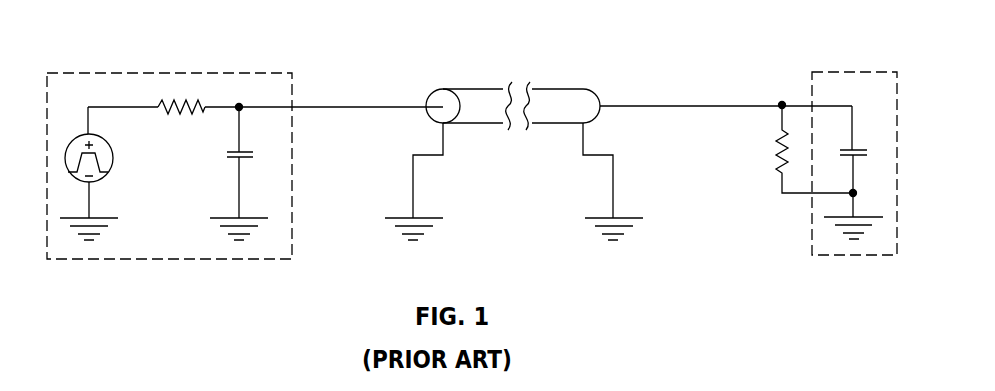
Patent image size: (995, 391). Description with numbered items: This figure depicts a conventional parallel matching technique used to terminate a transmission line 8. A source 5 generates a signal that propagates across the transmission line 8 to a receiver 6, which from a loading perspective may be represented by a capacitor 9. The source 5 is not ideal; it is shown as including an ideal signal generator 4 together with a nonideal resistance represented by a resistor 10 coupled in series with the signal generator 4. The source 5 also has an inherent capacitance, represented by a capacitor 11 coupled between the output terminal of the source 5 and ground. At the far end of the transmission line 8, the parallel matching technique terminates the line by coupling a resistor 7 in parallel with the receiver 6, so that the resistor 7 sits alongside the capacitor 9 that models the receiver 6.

The signal generator 4 is at (66, 140).
The source 5 is at (178, 259).
The receiver 6 is at (833, 255).
The resistor 7 is at (779, 143).
The transmission line 8 is at (553, 88).
The capacitor 9 is at (863, 149).
The resistor 10 is at (168, 100).
The capacitor 11 is at (245, 150).